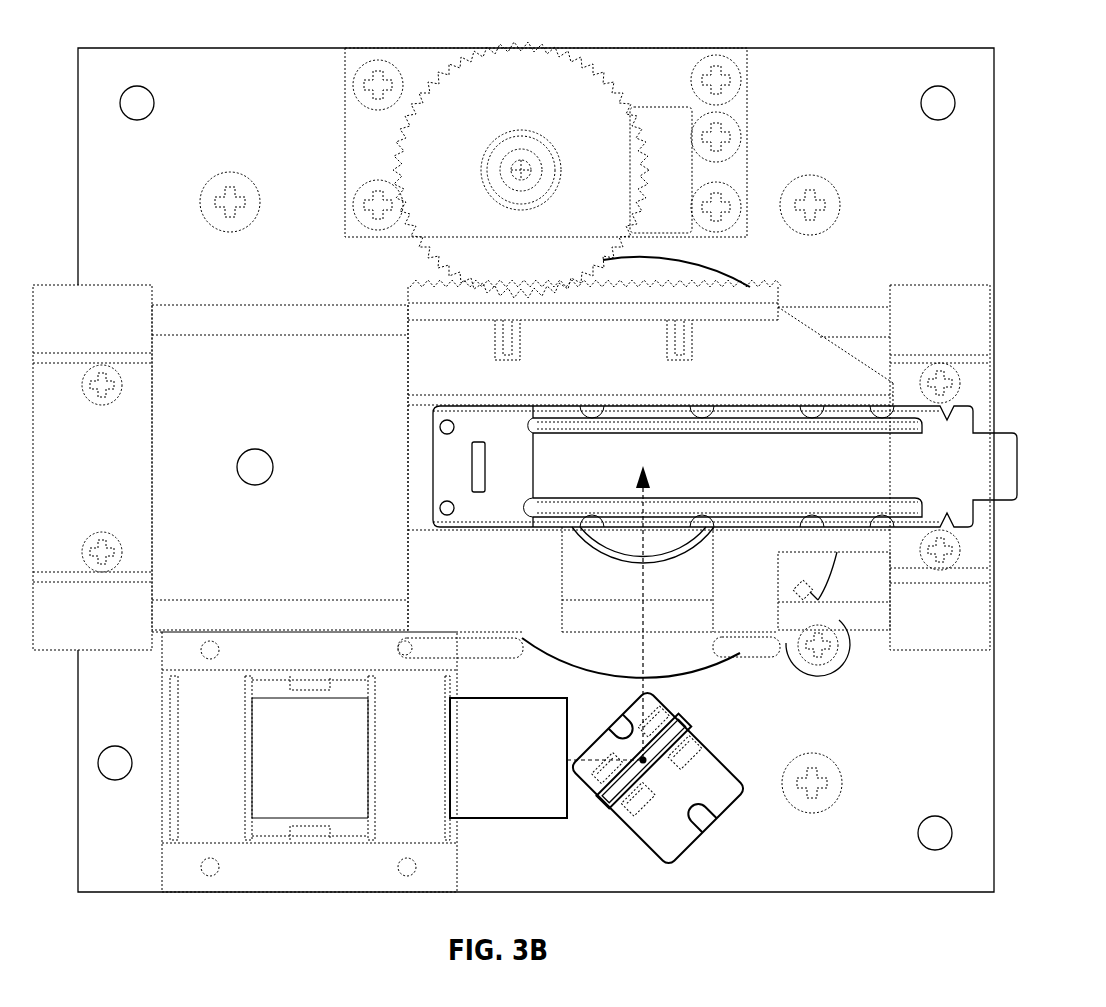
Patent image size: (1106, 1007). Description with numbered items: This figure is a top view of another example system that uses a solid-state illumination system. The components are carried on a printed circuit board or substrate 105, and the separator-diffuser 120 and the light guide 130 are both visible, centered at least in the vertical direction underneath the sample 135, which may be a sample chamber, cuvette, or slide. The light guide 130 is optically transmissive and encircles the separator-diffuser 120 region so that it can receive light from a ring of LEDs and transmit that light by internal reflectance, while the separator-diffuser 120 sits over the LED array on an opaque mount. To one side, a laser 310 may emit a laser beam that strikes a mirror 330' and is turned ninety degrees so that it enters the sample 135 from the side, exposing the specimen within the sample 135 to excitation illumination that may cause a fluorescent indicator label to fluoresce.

The substrate 105 is at (975, 798).
The separator-diffuser 120 is at (662, 538).
The light guide 130 is at (680, 273).
The sample 135 is at (678, 463).
The laser 310 is at (488, 783).
The mirror 330' is at (671, 776).